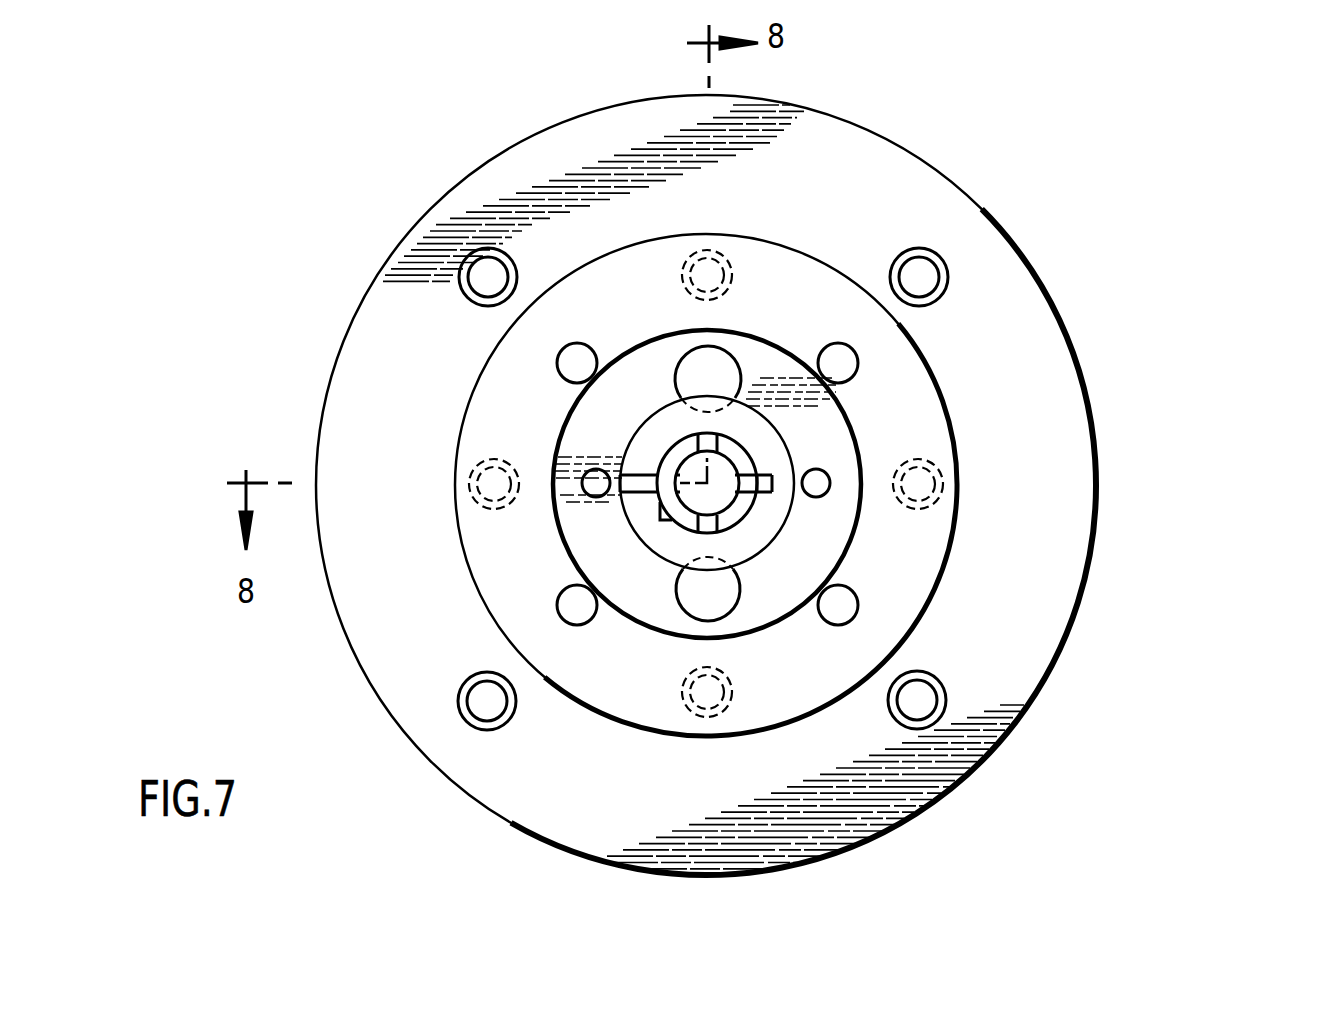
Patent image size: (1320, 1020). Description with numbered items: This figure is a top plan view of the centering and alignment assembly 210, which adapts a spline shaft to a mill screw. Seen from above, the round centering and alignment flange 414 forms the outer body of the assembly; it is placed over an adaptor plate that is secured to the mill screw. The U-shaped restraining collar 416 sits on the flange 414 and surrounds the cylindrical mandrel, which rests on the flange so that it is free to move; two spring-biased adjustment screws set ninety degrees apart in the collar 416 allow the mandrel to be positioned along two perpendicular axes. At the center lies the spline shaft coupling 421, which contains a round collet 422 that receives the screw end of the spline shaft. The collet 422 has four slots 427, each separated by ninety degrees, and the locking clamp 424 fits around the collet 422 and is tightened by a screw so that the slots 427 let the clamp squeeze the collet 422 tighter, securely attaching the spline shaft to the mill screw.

The centering and alignment assembly 210 is at (1198, 220).
The centering and alignment flange 414 is at (1023, 277).
The restraining collar 416 is at (922, 378).
The spline shaft coupling 421 is at (845, 455).
The locking clamp 424 is at (780, 452).
The collet 422 is at (743, 508).
The slots 427 is at (707, 533).